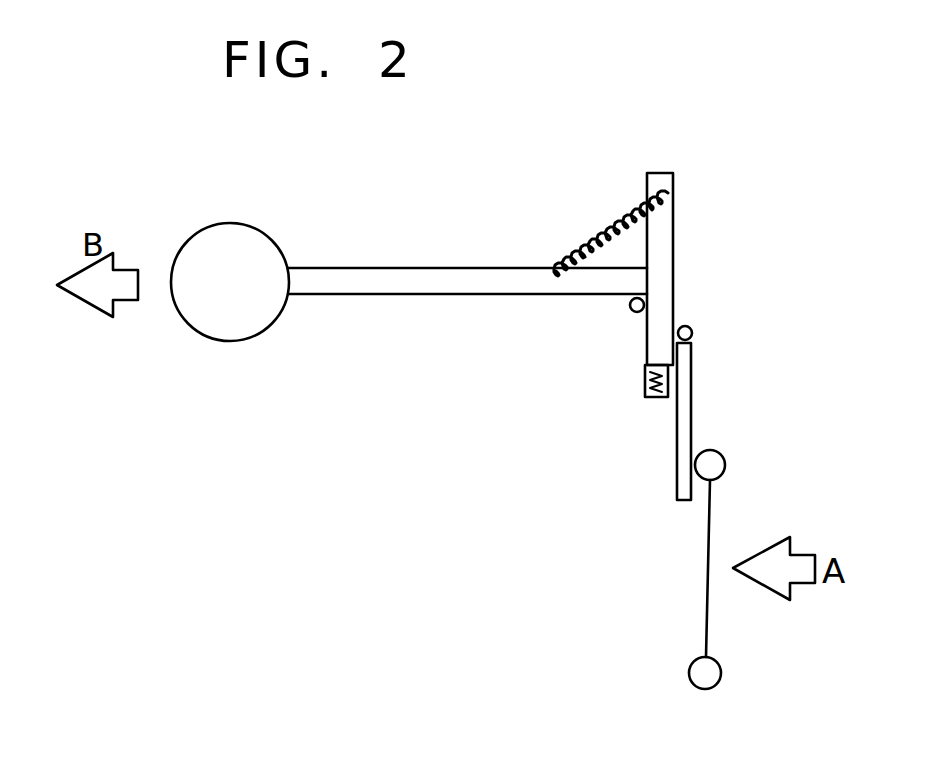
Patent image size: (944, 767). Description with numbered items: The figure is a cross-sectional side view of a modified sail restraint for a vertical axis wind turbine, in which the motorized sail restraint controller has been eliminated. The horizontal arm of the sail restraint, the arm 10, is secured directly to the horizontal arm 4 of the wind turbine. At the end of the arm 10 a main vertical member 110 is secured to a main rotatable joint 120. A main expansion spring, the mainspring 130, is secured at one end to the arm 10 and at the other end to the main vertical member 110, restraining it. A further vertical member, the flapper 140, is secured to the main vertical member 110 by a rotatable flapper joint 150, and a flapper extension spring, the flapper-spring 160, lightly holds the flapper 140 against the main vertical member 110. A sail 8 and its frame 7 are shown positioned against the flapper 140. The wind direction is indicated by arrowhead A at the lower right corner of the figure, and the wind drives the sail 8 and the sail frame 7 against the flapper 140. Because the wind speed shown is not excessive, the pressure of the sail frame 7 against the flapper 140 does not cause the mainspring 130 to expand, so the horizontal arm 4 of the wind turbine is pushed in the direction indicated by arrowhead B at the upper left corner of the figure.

The horizontal arm of the wind turbine 4 is at (250, 223).
The arm 10 is at (403, 297).
The main vertical member 110 is at (673, 248).
The main rotatable joint 120 is at (625, 303).
The mainspring 130 is at (595, 222).
The rotatable flapper joint 150 is at (690, 325).
The flapper-spring 160 is at (647, 370).
The flapper 140 is at (670, 432).
The sail frame 7 is at (725, 455).
The sail 8 is at (712, 518).